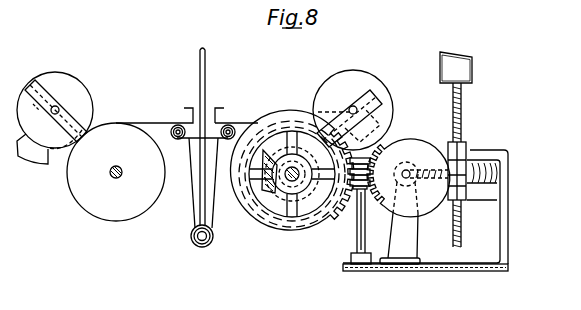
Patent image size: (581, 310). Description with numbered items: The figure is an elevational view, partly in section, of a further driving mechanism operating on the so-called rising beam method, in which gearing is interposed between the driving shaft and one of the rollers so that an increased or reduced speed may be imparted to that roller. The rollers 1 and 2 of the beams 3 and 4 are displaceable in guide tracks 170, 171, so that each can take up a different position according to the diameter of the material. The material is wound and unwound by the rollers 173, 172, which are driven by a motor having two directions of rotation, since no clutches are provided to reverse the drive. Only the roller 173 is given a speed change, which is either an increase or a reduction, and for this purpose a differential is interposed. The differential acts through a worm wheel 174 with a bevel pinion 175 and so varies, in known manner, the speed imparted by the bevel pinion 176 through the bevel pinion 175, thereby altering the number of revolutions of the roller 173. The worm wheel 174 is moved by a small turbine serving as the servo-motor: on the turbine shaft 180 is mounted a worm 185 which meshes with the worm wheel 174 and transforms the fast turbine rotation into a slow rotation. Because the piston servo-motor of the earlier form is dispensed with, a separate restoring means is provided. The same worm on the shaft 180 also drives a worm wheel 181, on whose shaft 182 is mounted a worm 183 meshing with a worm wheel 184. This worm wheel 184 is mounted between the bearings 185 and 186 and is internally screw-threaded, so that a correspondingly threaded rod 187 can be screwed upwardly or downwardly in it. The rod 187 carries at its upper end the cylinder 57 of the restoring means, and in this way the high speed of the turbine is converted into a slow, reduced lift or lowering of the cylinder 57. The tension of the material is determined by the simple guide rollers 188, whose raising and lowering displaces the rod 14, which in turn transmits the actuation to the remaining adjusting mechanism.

The roller 1 is at (59, 109).
The roller 2 is at (350, 106).
The beam 3 is at (73, 86).
The beam 4 is at (354, 72).
The rod 14 is at (206, 78).
The cylinder 57 is at (473, 73).
The guide track 170 is at (52, 88).
The guide track 171 is at (342, 112).
The roller 172 is at (112, 130).
The roller 173 is at (290, 128).
The worm wheel 174 is at (292, 234).
The bevel pinion 175 is at (265, 190).
The bevel pinion 176 is at (281, 193).
The turbine shaft 180 is at (358, 240).
The worm wheel 181 is at (427, 139).
The shaft 182 is at (408, 166).
The worm 183 is at (404, 168).
The worm wheel 184 is at (497, 160).
The worm 185 is at (358, 198).
The bearing 186 is at (458, 196).
The rod 187 is at (462, 112).
The guide rollers 188 is at (194, 244).